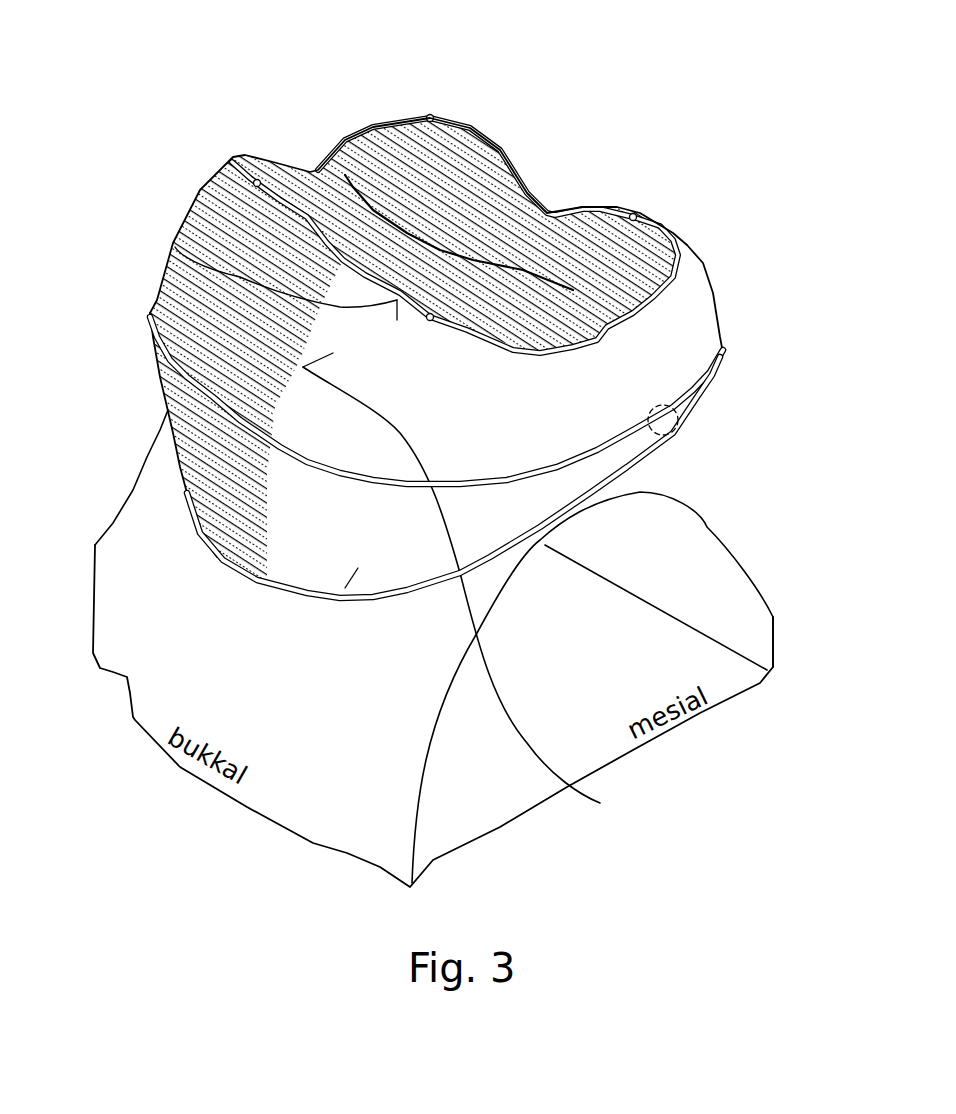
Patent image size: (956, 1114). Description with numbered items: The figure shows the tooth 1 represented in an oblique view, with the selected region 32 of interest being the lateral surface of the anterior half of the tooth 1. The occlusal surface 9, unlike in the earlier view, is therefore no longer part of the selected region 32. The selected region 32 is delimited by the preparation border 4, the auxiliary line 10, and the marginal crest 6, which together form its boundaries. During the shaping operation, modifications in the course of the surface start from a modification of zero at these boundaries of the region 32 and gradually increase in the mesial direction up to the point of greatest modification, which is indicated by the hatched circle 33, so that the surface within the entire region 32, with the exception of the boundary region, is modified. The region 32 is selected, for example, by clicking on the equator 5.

The tooth 1 is at (416, 313).
The preparation border 4 is at (340, 590).
The equator 5 is at (697, 390).
The marginal crest 6 is at (173, 247).
The occlusal surface 9 is at (414, 350).
The auxiliary line 10 is at (600, 803).
The selected region 32 is at (687, 293).
The hatched circle 33 is at (687, 427).